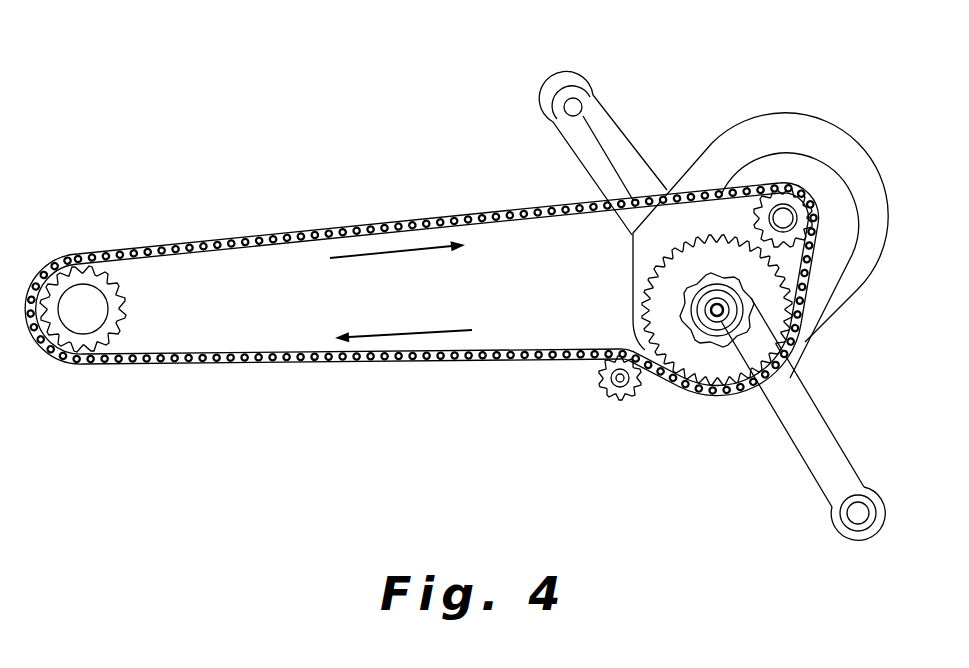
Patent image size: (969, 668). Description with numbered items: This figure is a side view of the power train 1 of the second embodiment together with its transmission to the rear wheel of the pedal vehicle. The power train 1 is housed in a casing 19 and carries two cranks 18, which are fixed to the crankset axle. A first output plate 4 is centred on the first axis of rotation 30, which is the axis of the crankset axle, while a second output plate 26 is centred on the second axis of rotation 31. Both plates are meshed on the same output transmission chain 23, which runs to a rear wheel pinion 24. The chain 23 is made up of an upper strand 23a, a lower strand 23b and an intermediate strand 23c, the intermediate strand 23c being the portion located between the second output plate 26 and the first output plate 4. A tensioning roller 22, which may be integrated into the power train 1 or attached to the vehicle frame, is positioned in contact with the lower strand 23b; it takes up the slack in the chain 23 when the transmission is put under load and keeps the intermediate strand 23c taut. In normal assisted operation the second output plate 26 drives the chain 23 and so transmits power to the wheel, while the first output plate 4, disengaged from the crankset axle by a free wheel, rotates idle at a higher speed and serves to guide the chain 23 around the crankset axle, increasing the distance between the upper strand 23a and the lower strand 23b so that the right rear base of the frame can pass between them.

The power train 1 is at (803, 80).
The first output plate 4 is at (765, 317).
The cranks 18 is at (802, 448).
The casing 19 is at (740, 123).
The tensioning roller 22 is at (612, 392).
The output transmission chain 23 is at (357, 355).
The upper strand 23a is at (267, 232).
The lower strand 23b is at (242, 362).
The intermediate strand 23c is at (805, 277).
The rear wheel pinion 24 is at (117, 307).
The second output plate 26 is at (787, 233).
The first axis of rotation 30 is at (715, 314).
The second axis of rotation 31 is at (790, 218).